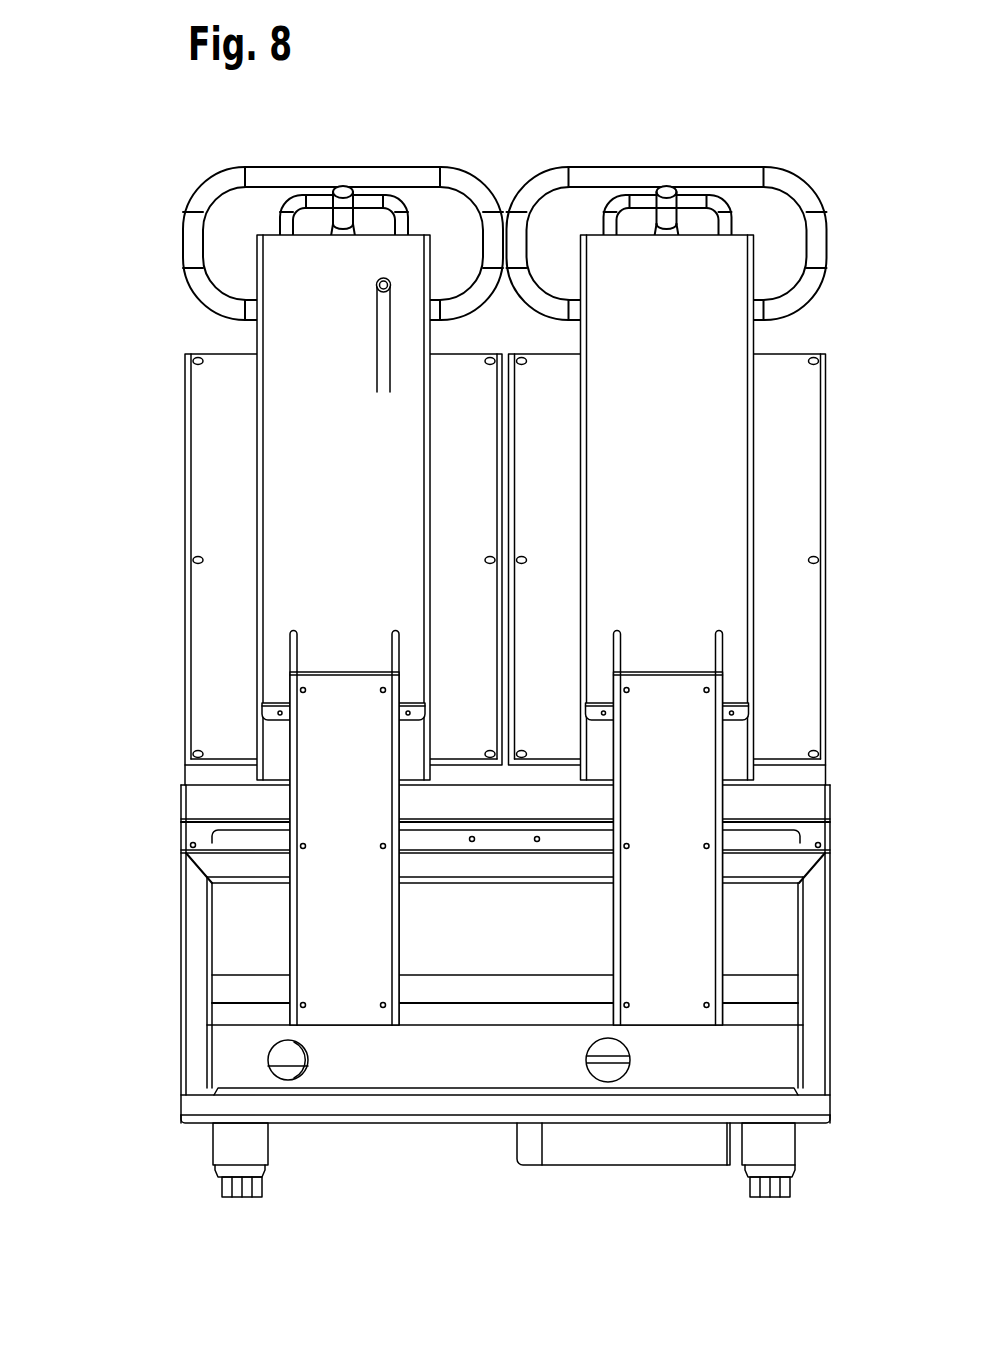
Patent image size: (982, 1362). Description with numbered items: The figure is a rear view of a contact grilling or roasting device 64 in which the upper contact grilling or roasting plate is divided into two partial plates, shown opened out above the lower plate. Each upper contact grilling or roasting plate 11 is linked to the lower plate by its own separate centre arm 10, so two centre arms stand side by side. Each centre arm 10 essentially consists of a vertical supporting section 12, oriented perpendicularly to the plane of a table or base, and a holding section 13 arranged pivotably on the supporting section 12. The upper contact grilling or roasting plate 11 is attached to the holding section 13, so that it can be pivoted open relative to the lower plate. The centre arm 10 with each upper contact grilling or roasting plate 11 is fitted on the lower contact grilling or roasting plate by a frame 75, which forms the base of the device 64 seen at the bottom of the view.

The centre arm 10 is at (284, 422).
The upper contact grilling or roasting plate 11 is at (218, 631).
The vertical supporting section 12 is at (362, 843).
The holding section 13 is at (360, 503).
The contact grilling or roasting device 64 is at (102, 741).
The frame 75 is at (815, 937).